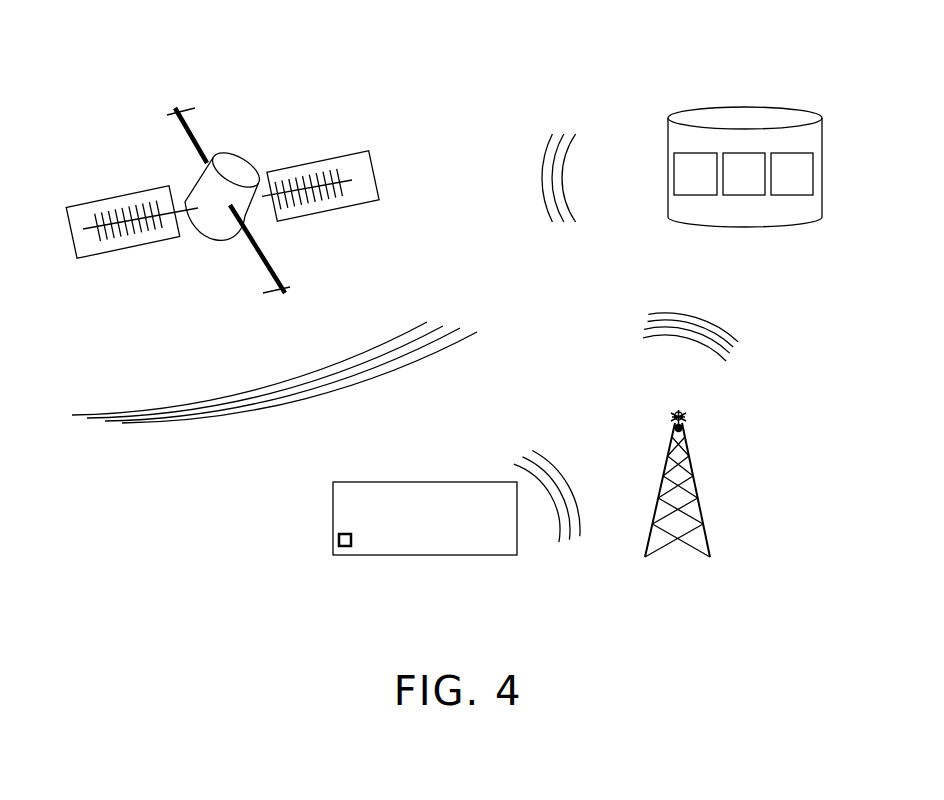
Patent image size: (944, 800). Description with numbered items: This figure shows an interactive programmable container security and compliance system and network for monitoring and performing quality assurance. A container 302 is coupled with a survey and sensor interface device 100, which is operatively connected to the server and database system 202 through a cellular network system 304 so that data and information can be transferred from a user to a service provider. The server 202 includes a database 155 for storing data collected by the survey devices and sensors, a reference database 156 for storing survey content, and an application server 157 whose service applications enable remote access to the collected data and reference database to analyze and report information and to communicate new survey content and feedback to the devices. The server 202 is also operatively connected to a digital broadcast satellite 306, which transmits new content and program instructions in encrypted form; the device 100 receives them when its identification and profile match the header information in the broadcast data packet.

The digital broadcast satellite 306 is at (278, 173).
The server and database system 202 is at (745, 106).
The database 155 is at (695, 174).
The reference database 156 is at (744, 174).
The application server 157 is at (792, 174).
The container 302 is at (333, 519).
The survey and sensor interface device 100 is at (343, 547).
The cellular network system 304 is at (698, 498).